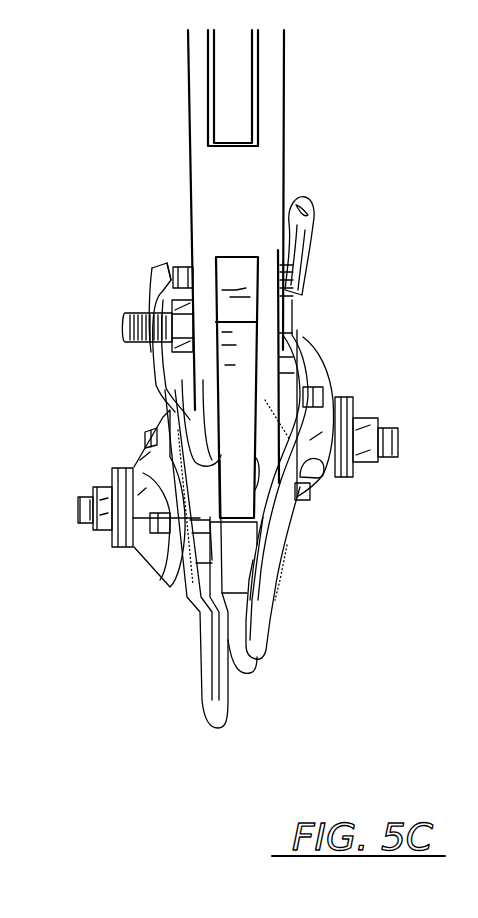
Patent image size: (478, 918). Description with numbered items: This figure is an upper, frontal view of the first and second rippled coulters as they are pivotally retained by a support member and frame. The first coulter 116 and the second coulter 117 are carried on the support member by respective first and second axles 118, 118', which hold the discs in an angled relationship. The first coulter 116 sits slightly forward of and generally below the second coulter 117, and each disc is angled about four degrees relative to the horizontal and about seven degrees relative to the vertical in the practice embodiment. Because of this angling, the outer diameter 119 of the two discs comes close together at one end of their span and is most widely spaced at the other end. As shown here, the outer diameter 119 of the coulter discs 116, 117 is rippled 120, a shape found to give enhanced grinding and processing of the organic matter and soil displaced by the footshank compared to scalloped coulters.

The first coulter disc 116 is at (197, 650).
The second coulter disc 117 is at (272, 605).
The first axle 118 is at (99, 450).
The second axle 118' is at (381, 415).
The outer diameter 119 is at (307, 308).
The rippled outer diameter 120 is at (323, 200).